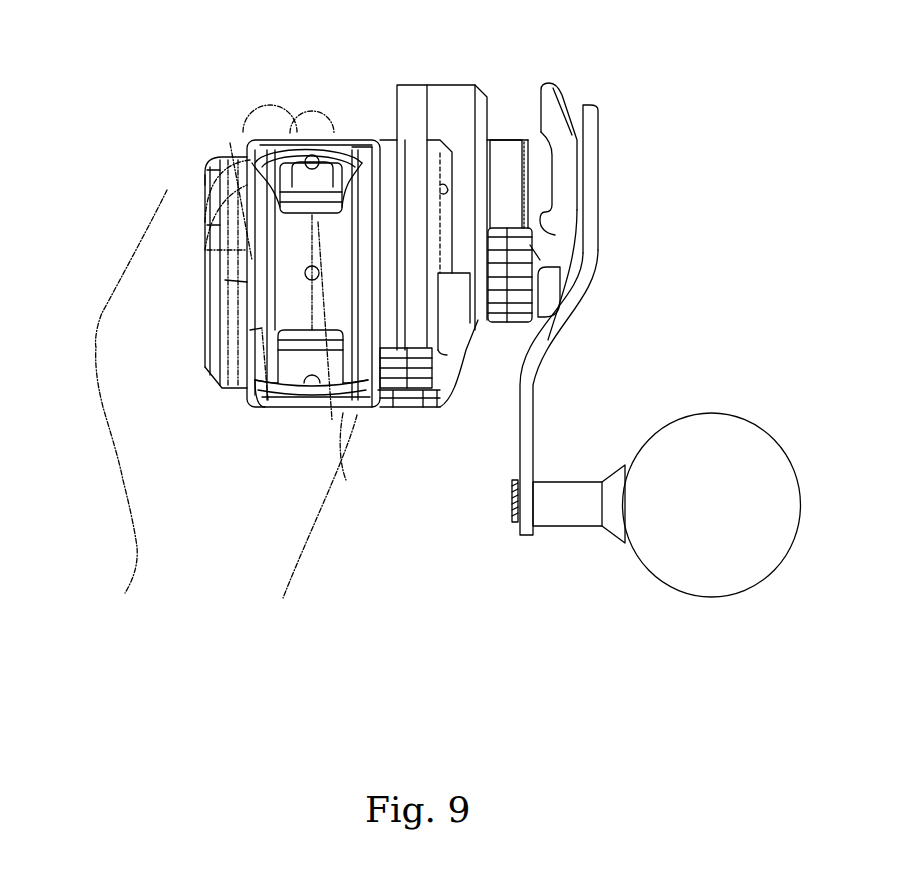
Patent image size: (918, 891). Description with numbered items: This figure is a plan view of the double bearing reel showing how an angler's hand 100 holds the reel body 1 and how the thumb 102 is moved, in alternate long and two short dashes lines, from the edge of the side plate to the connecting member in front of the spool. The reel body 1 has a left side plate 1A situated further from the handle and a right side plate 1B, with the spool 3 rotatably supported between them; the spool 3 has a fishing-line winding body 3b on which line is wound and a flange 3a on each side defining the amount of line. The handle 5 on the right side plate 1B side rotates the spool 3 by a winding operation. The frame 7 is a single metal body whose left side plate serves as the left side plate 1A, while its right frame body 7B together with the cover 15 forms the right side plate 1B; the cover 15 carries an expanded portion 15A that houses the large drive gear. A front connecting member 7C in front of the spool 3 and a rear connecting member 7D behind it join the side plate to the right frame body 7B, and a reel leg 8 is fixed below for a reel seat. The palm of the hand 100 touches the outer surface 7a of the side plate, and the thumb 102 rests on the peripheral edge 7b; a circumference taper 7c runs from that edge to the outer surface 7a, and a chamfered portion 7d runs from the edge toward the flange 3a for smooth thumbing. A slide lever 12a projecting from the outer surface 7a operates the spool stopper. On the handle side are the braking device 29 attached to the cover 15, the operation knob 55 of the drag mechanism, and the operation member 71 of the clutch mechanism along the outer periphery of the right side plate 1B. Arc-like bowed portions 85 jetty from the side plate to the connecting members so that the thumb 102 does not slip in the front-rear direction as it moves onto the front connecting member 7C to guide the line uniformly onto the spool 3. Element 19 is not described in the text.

The reel body 1 is at (205, 82).
The left side plate 1A is at (214, 157).
The right side plate 1B is at (500, 104).
The spool 3 is at (283, 205).
The flange 3a is at (250, 330).
The fishing-line winding body 3b is at (225, 280).
The handle 5 is at (533, 432).
The frame 7 is at (233, 393).
The outer surface 7a is at (207, 250).
The peripheral edge 7b is at (228, 150).
The circumference taper 7c is at (207, 170).
The chamfered portion 7d is at (207, 227).
The right frame body 7B is at (400, 300).
The front connecting member 7C is at (330, 140).
The rear connecting member 7D is at (330, 420).
The reel leg 8 is at (268, 400).
The slide lever 12a is at (200, 176).
The cover 15 is at (530, 220).
The expanded portion 15A is at (448, 95).
The clutch operating lever 19 is at (457, 193).
The braking device 29 is at (538, 254).
The operation knob 55 is at (557, 282).
The operation member 71 is at (432, 400).
The bowed portion 85 is at (255, 145).
The hand 100 is at (118, 278).
The thumb 102 is at (245, 140).